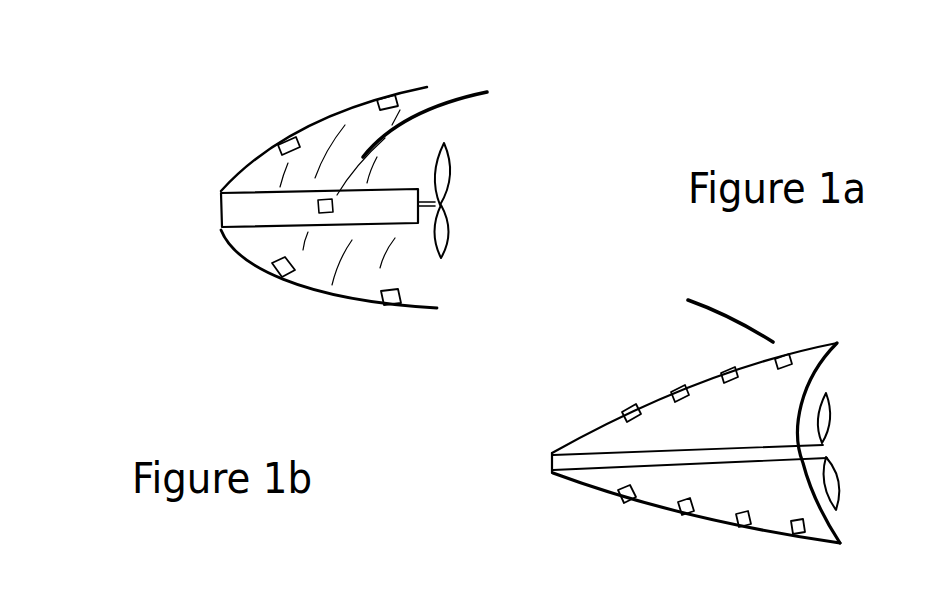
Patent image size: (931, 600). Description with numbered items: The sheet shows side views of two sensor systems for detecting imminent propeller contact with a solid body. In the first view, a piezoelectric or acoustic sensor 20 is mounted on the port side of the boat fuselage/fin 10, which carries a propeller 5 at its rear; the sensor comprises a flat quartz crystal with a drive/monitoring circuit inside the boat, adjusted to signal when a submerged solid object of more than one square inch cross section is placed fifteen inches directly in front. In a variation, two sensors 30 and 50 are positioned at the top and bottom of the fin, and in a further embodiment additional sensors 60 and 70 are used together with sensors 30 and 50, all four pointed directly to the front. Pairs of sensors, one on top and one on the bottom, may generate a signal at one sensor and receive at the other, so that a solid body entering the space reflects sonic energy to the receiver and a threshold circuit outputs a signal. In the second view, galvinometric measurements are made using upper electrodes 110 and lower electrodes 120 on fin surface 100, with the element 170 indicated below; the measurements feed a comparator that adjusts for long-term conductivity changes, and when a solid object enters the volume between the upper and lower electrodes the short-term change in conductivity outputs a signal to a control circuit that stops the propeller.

In FIG. 1A, the boat fuselage/fin 10 is at (187, 82).
In FIG. 1A, the propeller 5 is at (467, 165).
In FIG. 1A, the piezoelectric or acoustic sensor 20 is at (454, 106).
In FIG. 1A, the sensor 30 is at (378, 78).
In FIG. 1A, the additional sensor 60 is at (283, 127).
In FIG. 1A, the additional sensor 70 is at (277, 292).
In FIG. 1A, the sensor 50 is at (387, 312).
In FIG. 1B, the fin surface 100 is at (550, 355).
In FIG. 1B, the electrodes 110 is at (723, 360).
In FIG. 1B, the electrodes 120 is at (780, 547).
In FIG. 1B, the lower element 170 is at (263, 589).